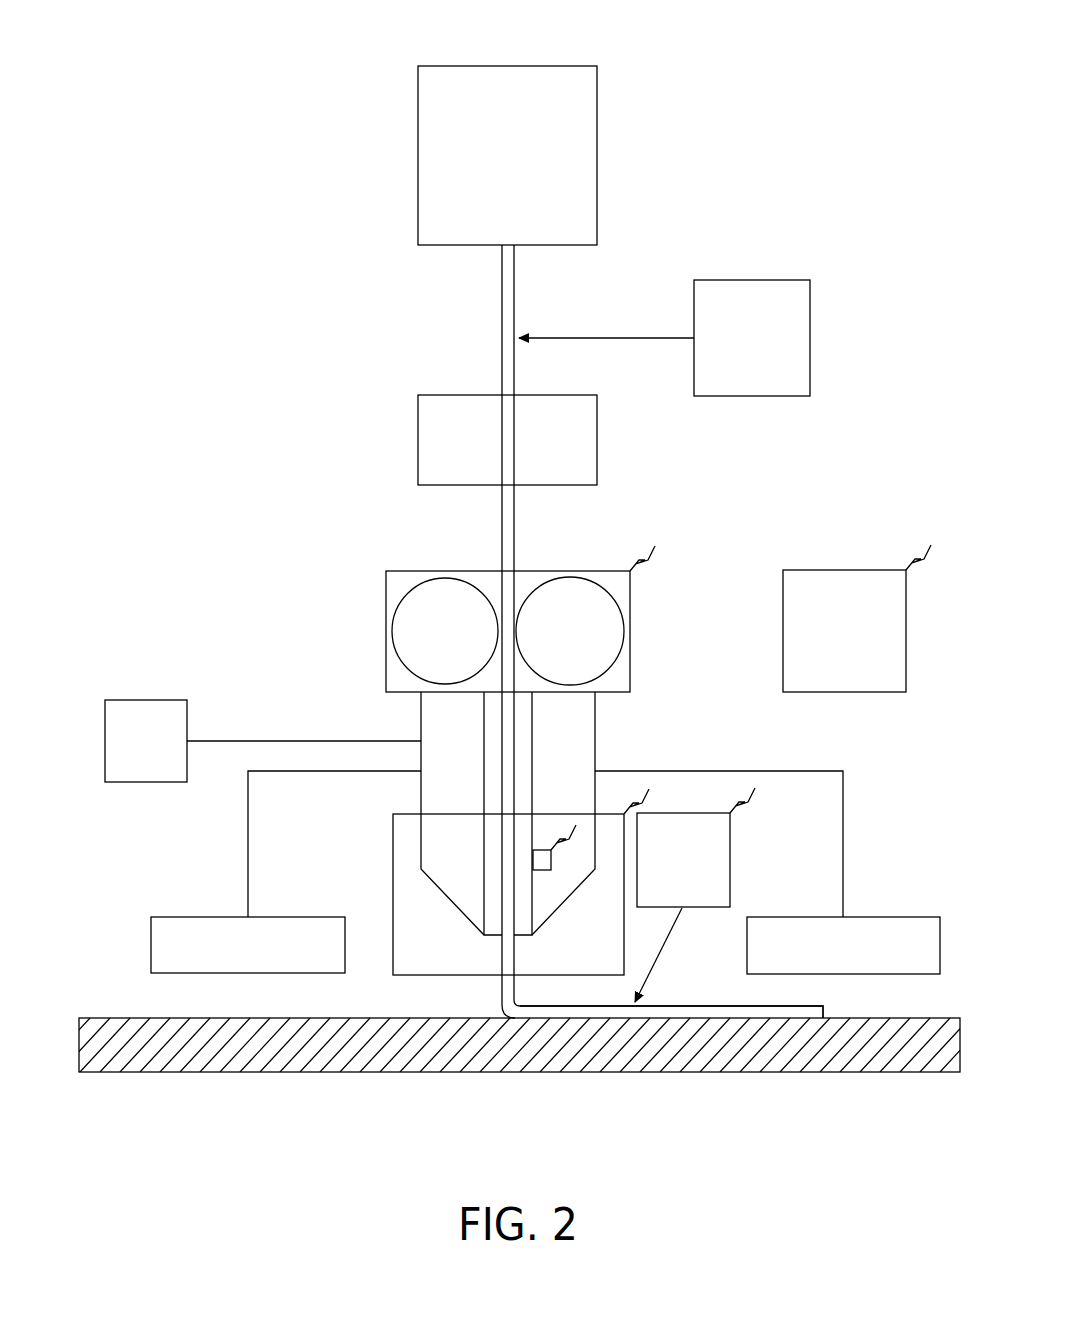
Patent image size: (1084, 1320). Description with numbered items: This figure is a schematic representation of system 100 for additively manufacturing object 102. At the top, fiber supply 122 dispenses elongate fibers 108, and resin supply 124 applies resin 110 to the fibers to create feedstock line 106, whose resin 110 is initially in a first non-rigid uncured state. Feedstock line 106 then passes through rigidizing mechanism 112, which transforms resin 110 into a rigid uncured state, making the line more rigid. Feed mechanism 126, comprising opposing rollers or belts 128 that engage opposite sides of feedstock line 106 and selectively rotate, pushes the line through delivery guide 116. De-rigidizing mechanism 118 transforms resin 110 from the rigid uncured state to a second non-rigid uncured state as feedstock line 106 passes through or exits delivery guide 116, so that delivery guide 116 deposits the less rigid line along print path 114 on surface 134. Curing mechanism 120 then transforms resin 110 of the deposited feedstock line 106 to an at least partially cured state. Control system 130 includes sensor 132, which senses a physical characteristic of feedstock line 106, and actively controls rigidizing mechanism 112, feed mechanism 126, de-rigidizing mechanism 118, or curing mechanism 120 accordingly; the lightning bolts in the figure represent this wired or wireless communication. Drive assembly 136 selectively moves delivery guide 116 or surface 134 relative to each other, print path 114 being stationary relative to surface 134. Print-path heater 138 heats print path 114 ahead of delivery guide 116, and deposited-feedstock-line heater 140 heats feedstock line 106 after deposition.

The system 100 is at (784, 38).
The object 102 is at (811, 1001).
The feedstock line 106 is at (502, 358).
The elongate fibers 108 is at (502, 270).
The resin 110 is at (614, 337).
The rigidizing mechanism 112 is at (597, 438).
The print path 114 is at (692, 1018).
The delivery guide 116 is at (595, 738).
The de-rigidizing mechanism 118 is at (393, 886).
The curing mechanism 120 is at (730, 848).
The fiber supply 122 is at (522, 66).
The resin supply 124 is at (738, 280).
The feed mechanism 126 is at (386, 610).
The opposing rollers or belts 128 is at (570, 578).
The control system 130 is at (840, 570).
The sensor 132 is at (551, 866).
The surface 134 is at (125, 1016).
The drive assembly 136 is at (157, 700).
The print-path heater 138 is at (195, 917).
The deposited-feedstock-line heater 140 is at (855, 917).